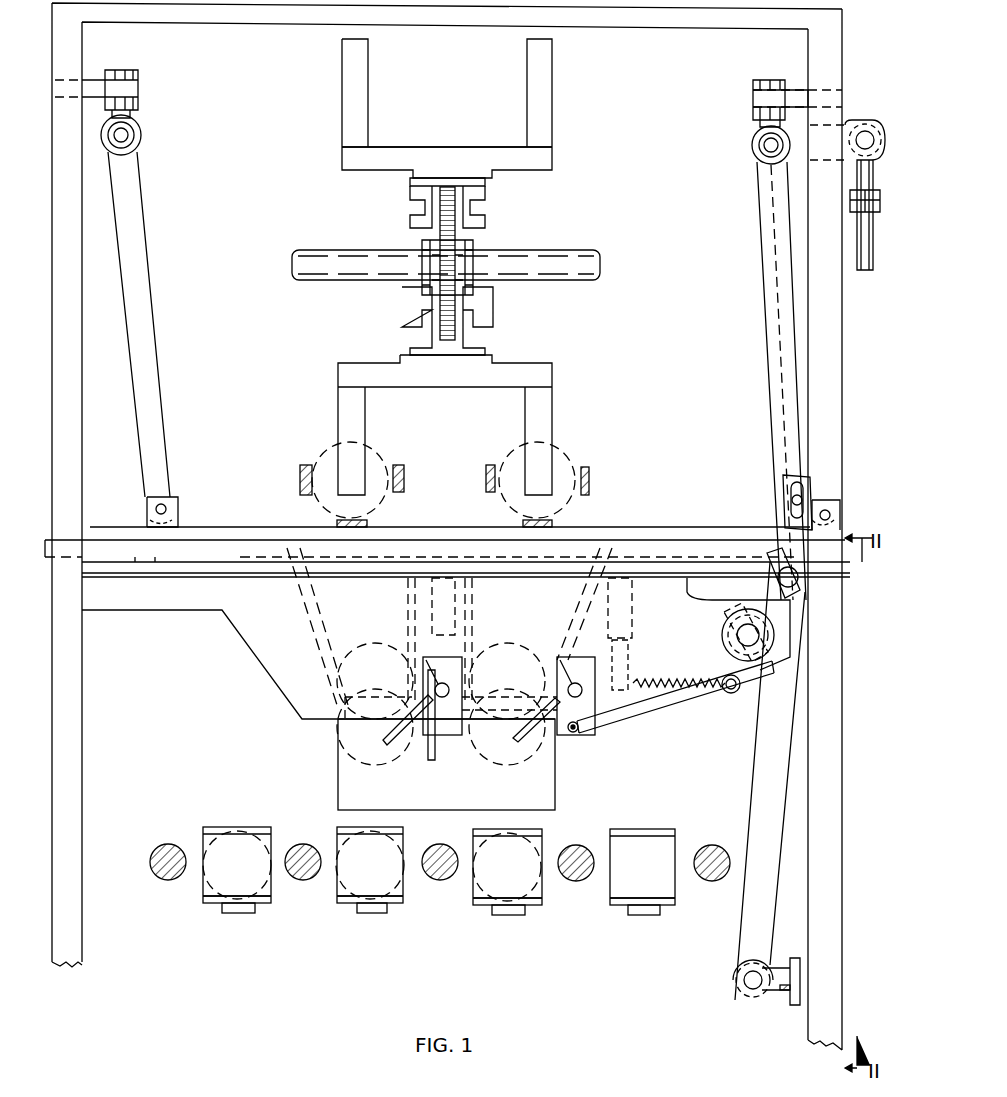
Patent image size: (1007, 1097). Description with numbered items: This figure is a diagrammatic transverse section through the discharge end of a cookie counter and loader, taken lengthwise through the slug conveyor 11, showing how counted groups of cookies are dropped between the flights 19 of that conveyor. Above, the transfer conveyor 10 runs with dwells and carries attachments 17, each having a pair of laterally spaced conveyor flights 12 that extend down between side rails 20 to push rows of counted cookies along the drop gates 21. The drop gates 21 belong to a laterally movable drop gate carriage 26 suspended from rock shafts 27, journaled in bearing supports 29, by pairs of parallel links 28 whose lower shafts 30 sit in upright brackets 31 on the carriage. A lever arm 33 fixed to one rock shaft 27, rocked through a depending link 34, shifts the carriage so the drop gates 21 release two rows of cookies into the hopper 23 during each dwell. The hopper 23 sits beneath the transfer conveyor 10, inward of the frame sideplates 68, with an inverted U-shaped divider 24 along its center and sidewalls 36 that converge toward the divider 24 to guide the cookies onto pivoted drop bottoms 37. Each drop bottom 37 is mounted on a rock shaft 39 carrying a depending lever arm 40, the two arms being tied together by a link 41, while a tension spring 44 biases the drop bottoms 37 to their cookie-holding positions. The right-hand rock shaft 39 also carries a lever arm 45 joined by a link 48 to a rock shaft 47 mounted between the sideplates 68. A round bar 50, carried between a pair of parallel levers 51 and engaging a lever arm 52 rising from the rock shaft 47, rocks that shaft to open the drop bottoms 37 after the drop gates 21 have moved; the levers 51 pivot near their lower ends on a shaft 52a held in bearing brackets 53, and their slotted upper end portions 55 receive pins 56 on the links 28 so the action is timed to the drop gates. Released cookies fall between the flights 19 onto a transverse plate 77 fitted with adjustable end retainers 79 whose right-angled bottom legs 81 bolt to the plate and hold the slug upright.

The transfer conveyor 10 is at (495, 203).
The slug conveyor 11 is at (208, 918).
The conveyor flights 12 is at (368, 78).
The attachments 17 is at (415, 147).
The flights 19 is at (165, 845).
The side rails 20 is at (303, 465).
The drop gates 21 is at (372, 522).
The hopper 23 is at (278, 665).
The divider 24 is at (470, 603).
The drop gate carriage 26 is at (268, 527).
The rock shafts 27 is at (128, 140).
The parallel links 28 is at (150, 303).
The bearing supports 29 is at (140, 128).
The shafts 30 is at (150, 509).
The upright brackets 31 is at (170, 497).
The lever arm 33 is at (795, 100).
The link 34 is at (868, 262).
The sidewalls 36 is at (298, 605).
The drop bottoms 37 is at (395, 742).
The rock shafts 39 is at (436, 690).
The lever arms 40 is at (445, 737).
The link 41 is at (478, 737).
The tension spring 44 is at (660, 683).
The lever arm 45 is at (722, 640).
The rock shaft 47 is at (738, 628).
The link 48 is at (672, 708).
The bar 50 is at (800, 583).
The levers 51 is at (772, 765).
The lever arm 52 is at (795, 590).
The shaft 52a is at (745, 998).
The bearing brackets 53 is at (780, 1005).
The slotted upper end portions 55 is at (790, 480).
The pins 56 is at (790, 498).
The sideplates 68 is at (298, 705).
The transverse plate 77 is at (384, 913).
The end retainers 79 is at (232, 827).
The bottom legs 81 is at (204, 895).